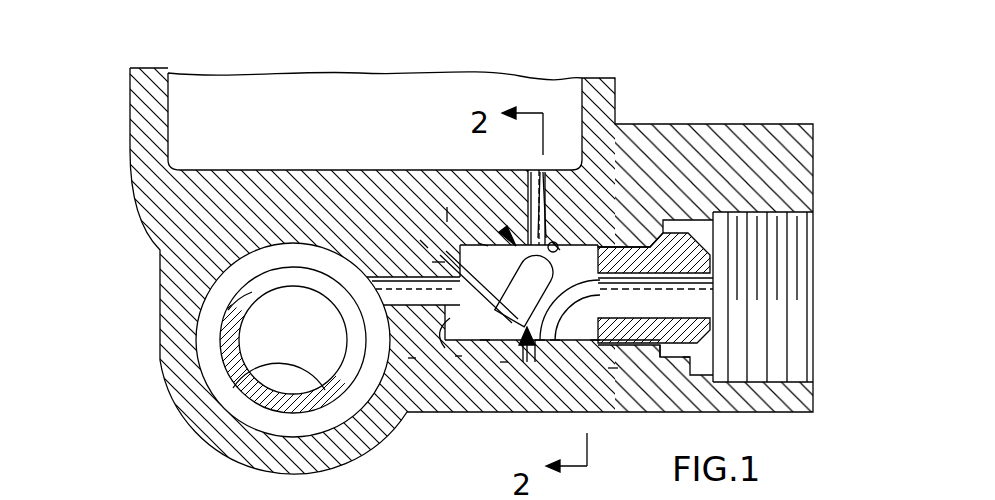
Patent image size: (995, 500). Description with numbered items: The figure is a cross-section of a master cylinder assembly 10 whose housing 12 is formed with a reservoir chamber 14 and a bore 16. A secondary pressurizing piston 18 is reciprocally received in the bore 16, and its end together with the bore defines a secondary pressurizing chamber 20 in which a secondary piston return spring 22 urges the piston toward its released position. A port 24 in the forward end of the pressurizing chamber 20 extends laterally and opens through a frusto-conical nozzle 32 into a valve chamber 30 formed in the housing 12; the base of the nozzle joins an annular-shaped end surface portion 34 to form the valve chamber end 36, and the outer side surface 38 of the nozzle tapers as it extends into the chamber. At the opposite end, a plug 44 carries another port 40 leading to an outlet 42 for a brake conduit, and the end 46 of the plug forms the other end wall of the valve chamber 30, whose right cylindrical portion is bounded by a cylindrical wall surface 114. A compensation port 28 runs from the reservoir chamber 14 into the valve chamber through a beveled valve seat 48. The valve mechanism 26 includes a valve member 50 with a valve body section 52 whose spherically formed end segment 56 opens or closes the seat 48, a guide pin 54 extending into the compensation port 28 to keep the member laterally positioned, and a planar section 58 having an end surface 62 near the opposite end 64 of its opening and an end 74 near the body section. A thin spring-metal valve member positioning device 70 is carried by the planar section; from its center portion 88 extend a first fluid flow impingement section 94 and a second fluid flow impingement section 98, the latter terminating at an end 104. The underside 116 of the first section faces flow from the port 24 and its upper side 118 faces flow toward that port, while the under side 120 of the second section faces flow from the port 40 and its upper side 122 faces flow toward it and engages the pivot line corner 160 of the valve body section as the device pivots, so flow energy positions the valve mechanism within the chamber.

The master cylinder assembly 10 is at (110, 104).
The housing 12 is at (137, 195).
The reservoir chamber 14 is at (258, 105).
The bore 16 is at (213, 283).
The secondary pressurizing piston 18 is at (262, 337).
The secondary pressurizing chamber 20 is at (210, 372).
The secondary piston return spring 22 is at (258, 396).
The port 24 is at (356, 263).
The valve mechanism 26 is at (503, 229).
The compensation port 28 is at (556, 242).
The valve chamber 30 is at (612, 369).
The nozzle 32 is at (458, 357).
The annular-shaped end surface portion 34 is at (412, 359).
The valve chamber end 36 is at (451, 202).
The outer side surface 38 is at (452, 344).
The port 40 is at (650, 358).
The outlet 42 is at (735, 216).
The plug 44 is at (683, 360).
The end of plug 46 is at (600, 248).
The valve seat 48 is at (565, 235).
The valve member 50 is at (527, 288).
The valve body section 52 is at (457, 266).
The guide pin 54 is at (552, 180).
The spherically formed end segment 56 is at (528, 214).
The planar section 58 is at (432, 262).
The end surface 62 is at (420, 240).
The opposite end of opening 64 is at (480, 245).
The valve member positioning device 70 is at (528, 364).
The end of planar section 74 is at (540, 341).
The center portion 88 is at (503, 362).
The first fluid flow impingement section 94 is at (485, 341).
The second fluid flow impingement section 98 is at (598, 341).
The end of positioning device 104 is at (598, 238).
The cylindrical wall surface 114 is at (393, 311).
The underside of first impingement section 116 is at (405, 291).
The upper side of first impingement section 118 is at (455, 318).
The under side of second impingement section 120 is at (655, 254).
The upper side of second impingement section 122 is at (655, 333).
The pivot line corner 160 is at (553, 360).